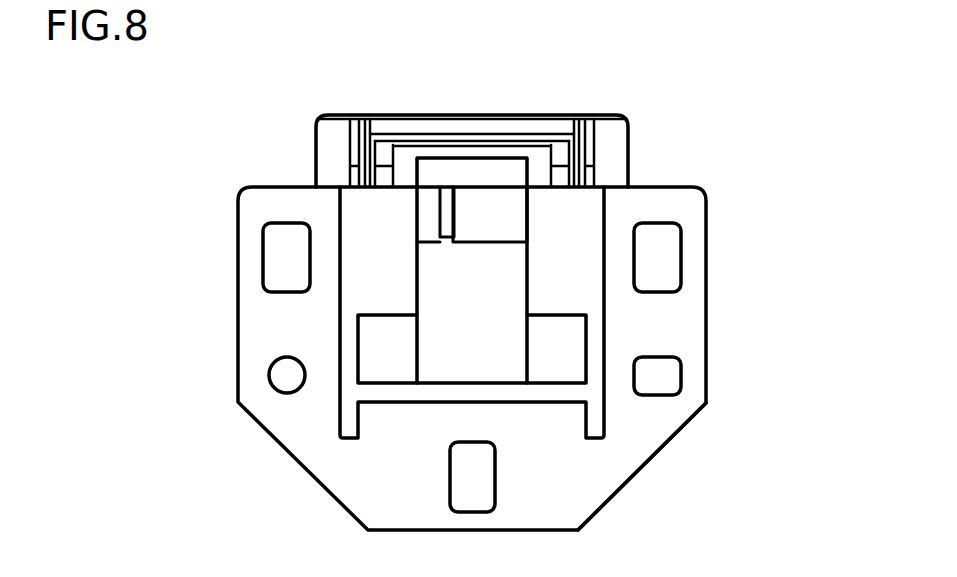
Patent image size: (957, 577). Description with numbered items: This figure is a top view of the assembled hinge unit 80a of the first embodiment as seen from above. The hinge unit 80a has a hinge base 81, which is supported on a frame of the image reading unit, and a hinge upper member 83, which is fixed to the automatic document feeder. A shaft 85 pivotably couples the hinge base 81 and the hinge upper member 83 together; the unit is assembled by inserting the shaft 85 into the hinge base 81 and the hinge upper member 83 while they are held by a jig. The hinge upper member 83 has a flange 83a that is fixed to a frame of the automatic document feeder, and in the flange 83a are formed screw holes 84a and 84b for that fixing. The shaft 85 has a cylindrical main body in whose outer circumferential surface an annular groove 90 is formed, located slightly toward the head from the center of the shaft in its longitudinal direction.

The hinge unit 80a is at (737, 181).
The hinge base 81 is at (318, 138).
The hinge upper member 83 is at (240, 318).
The flange 83a is at (593, 483).
The screw holes 84a is at (274, 392).
The screw holes 84b is at (263, 249).
The shaft 85 is at (502, 195).
The groove 90 is at (442, 192).